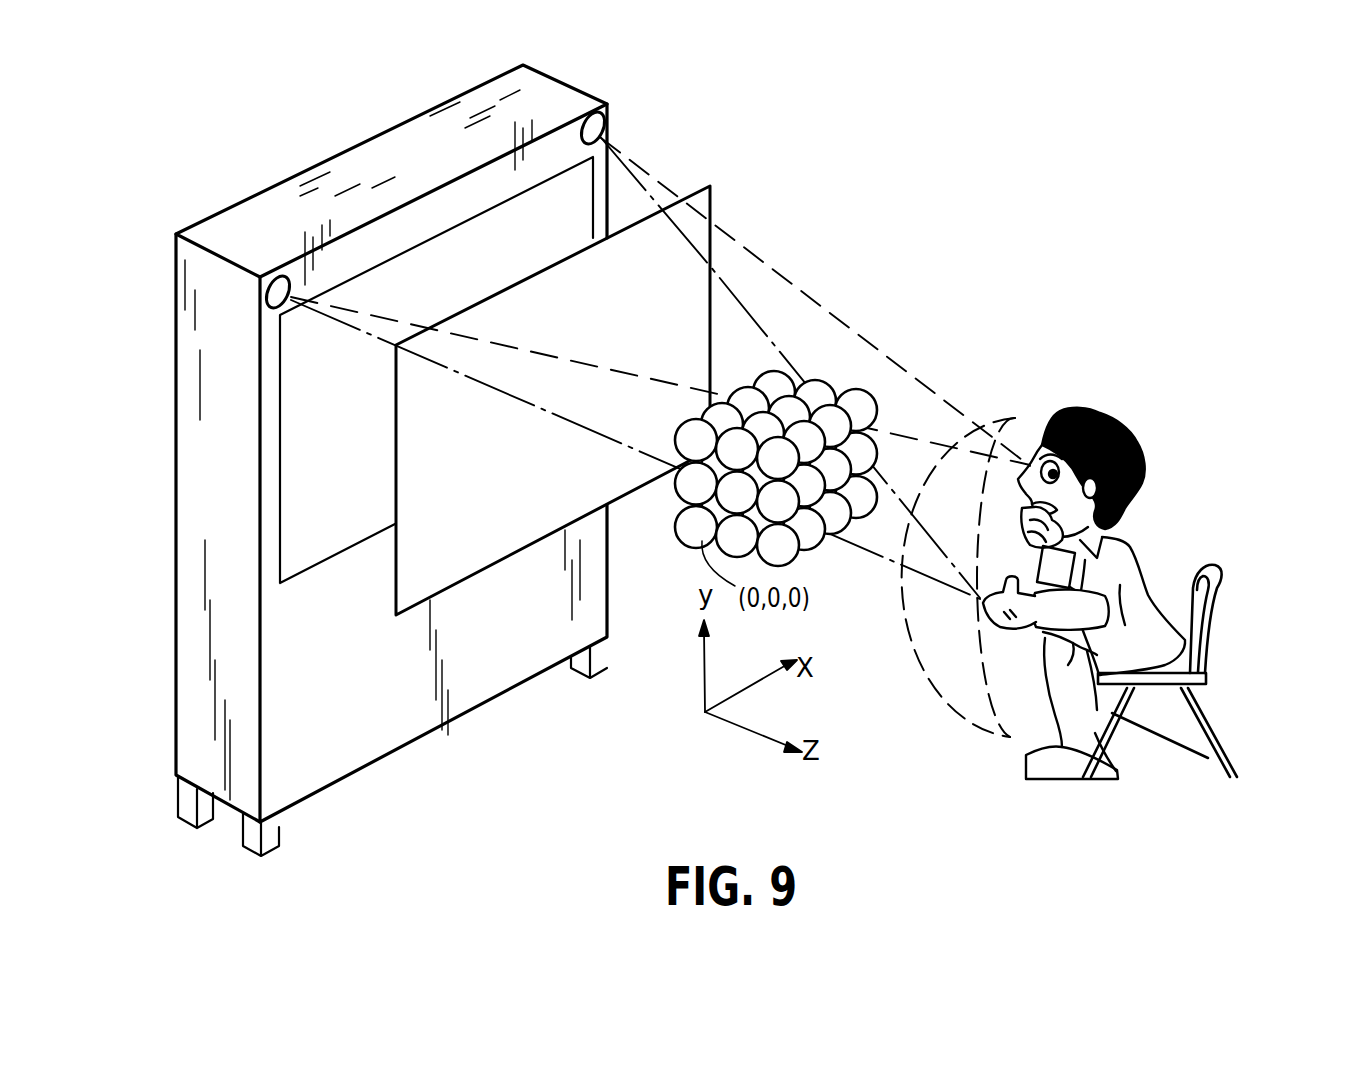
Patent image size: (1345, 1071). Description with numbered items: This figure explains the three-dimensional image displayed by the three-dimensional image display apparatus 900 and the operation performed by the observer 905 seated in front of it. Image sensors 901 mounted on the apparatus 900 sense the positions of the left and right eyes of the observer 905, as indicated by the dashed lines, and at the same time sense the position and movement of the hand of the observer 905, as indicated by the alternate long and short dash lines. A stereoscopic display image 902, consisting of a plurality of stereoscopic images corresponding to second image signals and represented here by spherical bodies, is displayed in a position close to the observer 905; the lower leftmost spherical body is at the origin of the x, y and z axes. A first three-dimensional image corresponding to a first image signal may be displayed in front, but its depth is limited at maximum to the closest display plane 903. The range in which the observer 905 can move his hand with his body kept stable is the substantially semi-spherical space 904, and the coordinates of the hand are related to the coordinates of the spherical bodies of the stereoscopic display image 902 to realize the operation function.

The three-dimensional image display apparatus 900 is at (427, 720).
The image sensors 901 is at (283, 278).
The stereoscopic display image 902 is at (679, 556).
The closest display plane 903 is at (710, 195).
The semi-spherical space 904 is at (1017, 418).
The observer 905 is at (1062, 768).